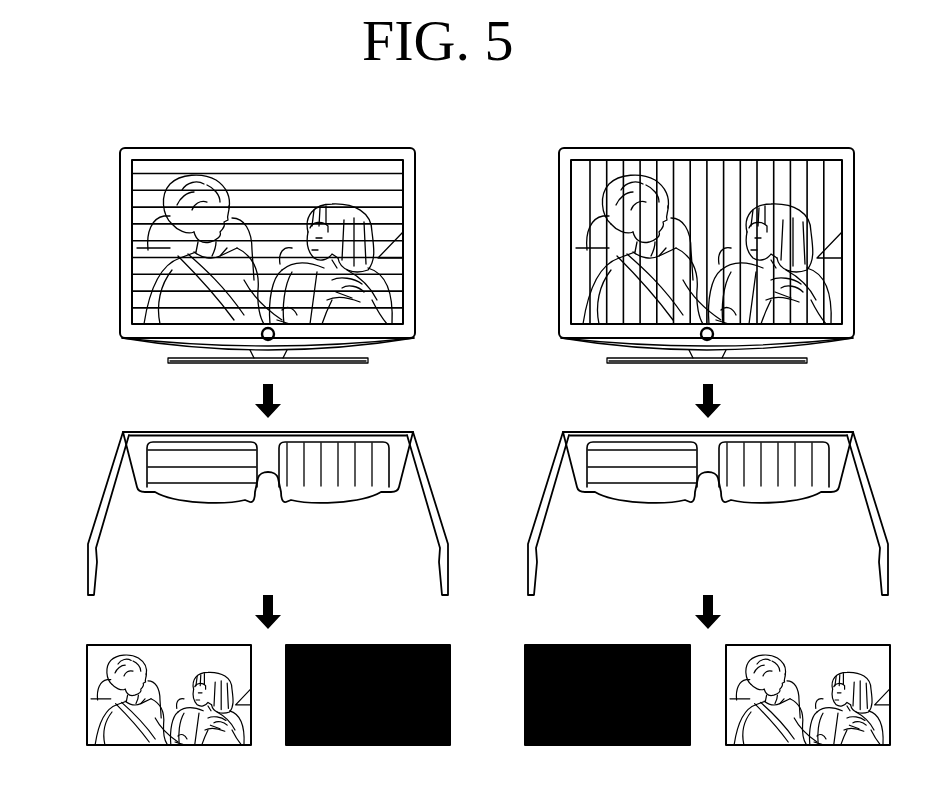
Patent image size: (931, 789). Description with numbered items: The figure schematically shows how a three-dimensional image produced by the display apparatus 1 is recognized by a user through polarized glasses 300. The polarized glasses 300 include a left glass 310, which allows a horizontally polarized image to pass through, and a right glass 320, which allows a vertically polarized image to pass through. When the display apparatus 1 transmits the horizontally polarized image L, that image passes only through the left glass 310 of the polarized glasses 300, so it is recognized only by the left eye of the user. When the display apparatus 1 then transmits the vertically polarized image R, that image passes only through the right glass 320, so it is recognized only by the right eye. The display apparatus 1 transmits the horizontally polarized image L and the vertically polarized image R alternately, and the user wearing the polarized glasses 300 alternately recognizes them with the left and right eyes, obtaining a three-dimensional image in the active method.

The display apparatus 1 is at (99, 283).
The polarized glasses 300 is at (448, 491).
The left glass 310 is at (189, 450).
The right glass 320 is at (351, 450).
The horizontally polarized image L is at (330, 165).
The vertically polarized image R is at (770, 165).